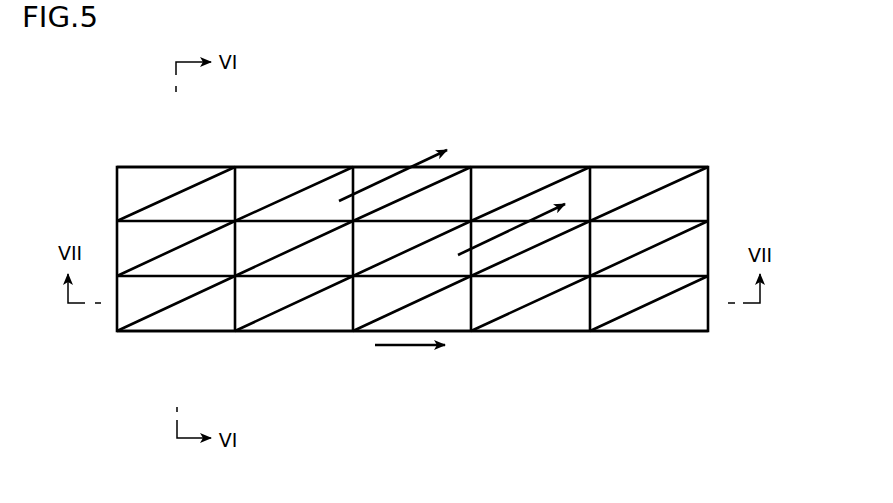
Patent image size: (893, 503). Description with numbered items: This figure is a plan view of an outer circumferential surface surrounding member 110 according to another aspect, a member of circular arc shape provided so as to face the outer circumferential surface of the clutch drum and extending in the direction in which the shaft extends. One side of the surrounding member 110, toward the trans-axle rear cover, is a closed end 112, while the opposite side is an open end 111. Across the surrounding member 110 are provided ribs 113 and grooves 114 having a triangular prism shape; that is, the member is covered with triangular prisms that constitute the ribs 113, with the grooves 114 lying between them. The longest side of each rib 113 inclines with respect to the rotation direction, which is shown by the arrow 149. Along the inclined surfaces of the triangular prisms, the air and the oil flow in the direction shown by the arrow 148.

The outer circumferential surface surrounding member 110 is at (430, 250).
The open end 111 is at (719, 166).
The closed end 112 is at (719, 333).
The rib 113 is at (678, 315).
The groove 114 is at (535, 288).
The arrow 148 is at (541, 193).
The arrow 149 is at (408, 349).